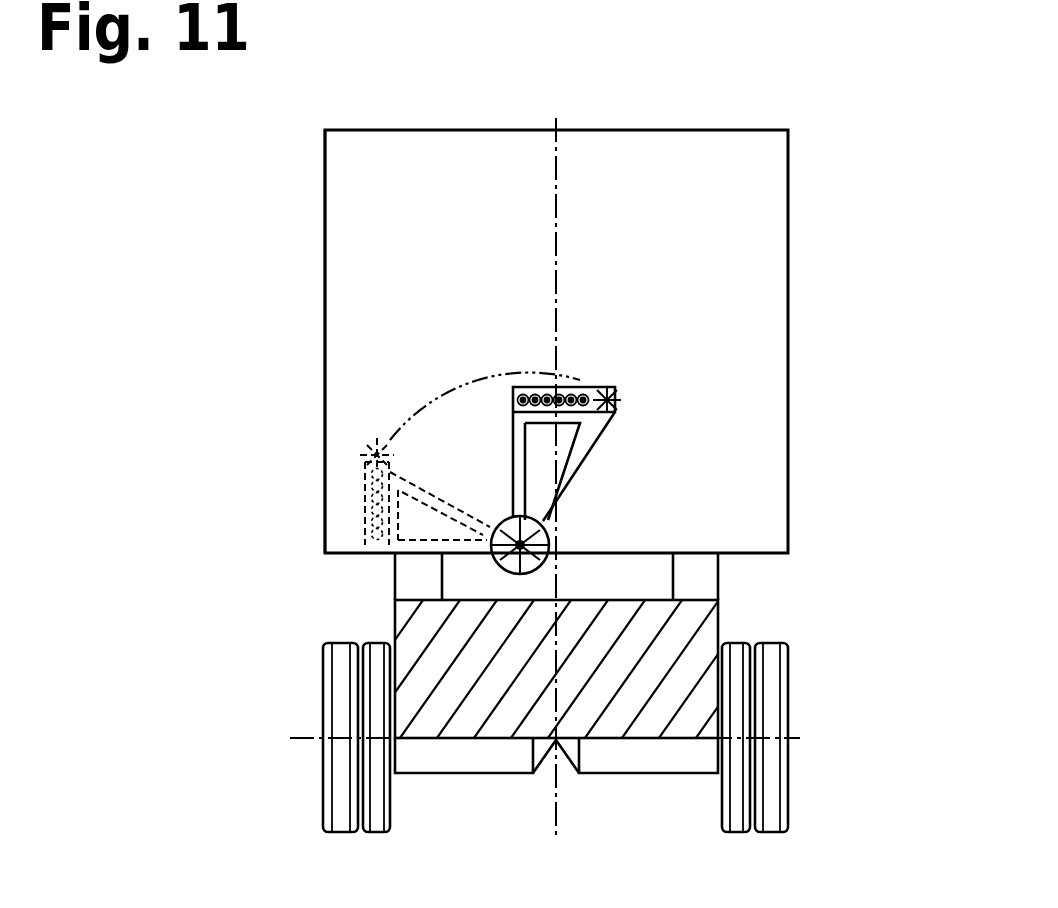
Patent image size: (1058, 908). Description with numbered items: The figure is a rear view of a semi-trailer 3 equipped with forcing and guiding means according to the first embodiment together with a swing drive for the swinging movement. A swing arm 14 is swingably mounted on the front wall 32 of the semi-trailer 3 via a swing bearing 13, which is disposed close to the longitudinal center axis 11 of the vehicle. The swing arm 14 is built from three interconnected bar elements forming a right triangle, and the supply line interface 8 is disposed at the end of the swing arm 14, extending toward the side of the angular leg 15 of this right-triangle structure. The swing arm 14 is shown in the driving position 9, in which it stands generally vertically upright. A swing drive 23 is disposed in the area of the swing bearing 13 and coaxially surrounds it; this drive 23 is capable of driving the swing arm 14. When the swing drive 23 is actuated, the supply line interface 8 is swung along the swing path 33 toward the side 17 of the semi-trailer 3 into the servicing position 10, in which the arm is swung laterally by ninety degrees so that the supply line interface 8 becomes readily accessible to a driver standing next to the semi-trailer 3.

The semi-trailer 3 is at (679, 208).
The front wall 32 is at (738, 208).
The side 17 is at (316, 166).
The longitudinal center axis 11 is at (558, 173).
The swing drive 23 is at (520, 574).
The swing bearing 13 is at (548, 573).
The angular leg 15 is at (595, 413).
The swing arm 14 is at (577, 458).
The supply line interface 8 is at (704, 296).
The driving position 9 is at (587, 392).
The servicing position 10 is at (375, 485).
The swing path 33 is at (458, 387).